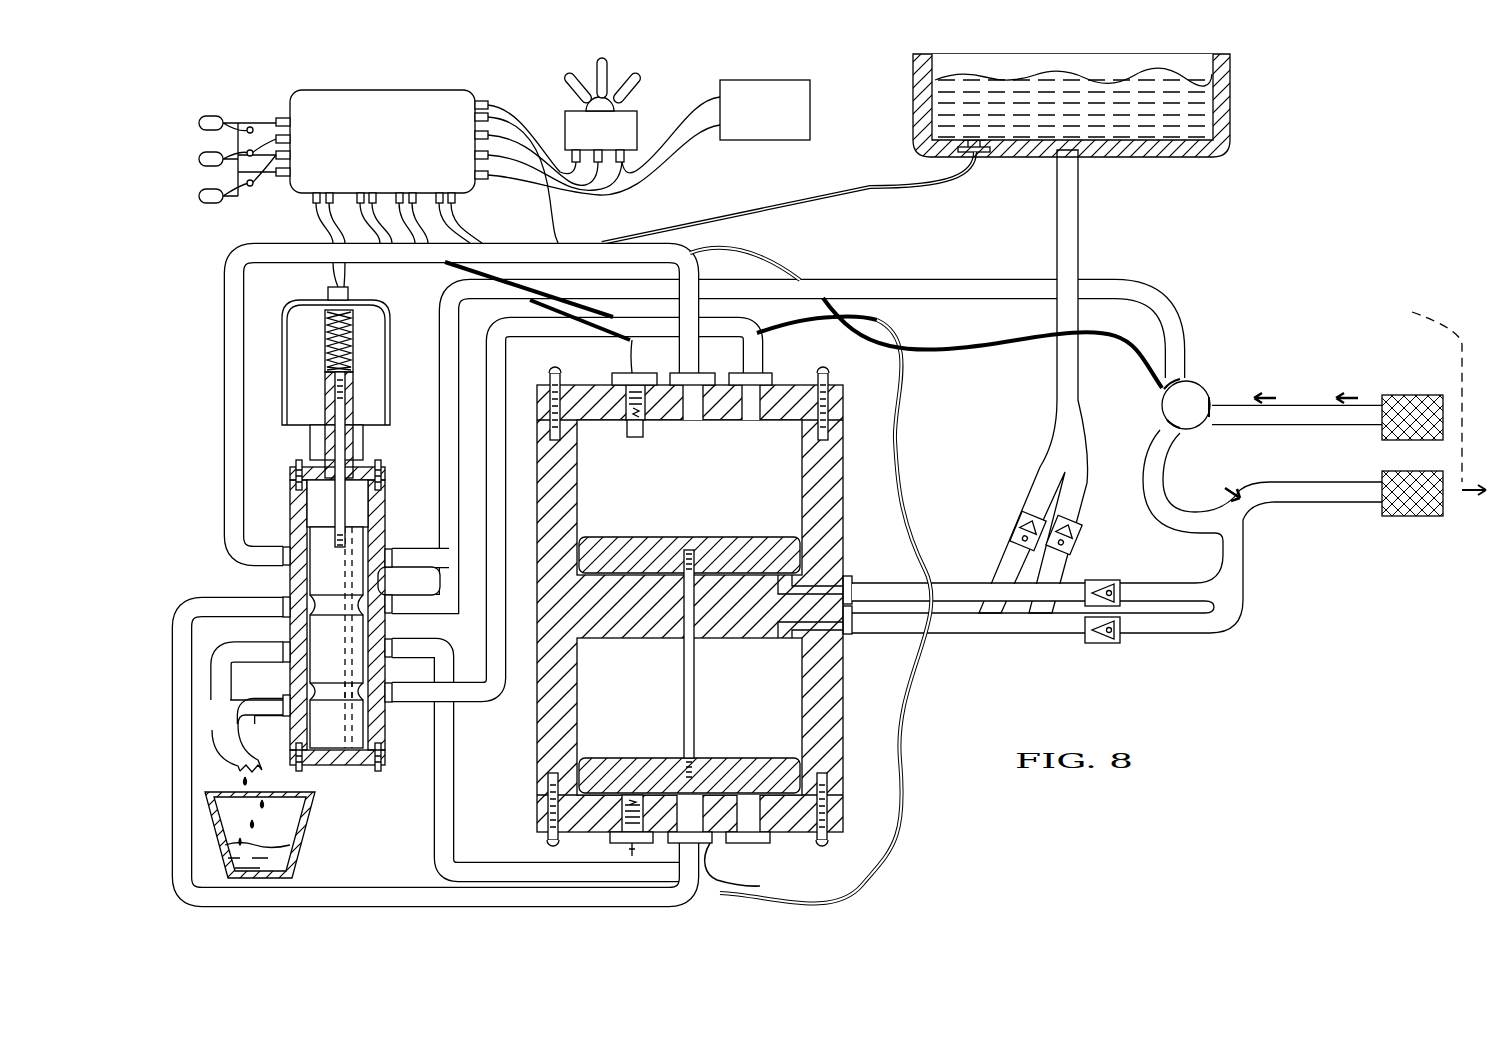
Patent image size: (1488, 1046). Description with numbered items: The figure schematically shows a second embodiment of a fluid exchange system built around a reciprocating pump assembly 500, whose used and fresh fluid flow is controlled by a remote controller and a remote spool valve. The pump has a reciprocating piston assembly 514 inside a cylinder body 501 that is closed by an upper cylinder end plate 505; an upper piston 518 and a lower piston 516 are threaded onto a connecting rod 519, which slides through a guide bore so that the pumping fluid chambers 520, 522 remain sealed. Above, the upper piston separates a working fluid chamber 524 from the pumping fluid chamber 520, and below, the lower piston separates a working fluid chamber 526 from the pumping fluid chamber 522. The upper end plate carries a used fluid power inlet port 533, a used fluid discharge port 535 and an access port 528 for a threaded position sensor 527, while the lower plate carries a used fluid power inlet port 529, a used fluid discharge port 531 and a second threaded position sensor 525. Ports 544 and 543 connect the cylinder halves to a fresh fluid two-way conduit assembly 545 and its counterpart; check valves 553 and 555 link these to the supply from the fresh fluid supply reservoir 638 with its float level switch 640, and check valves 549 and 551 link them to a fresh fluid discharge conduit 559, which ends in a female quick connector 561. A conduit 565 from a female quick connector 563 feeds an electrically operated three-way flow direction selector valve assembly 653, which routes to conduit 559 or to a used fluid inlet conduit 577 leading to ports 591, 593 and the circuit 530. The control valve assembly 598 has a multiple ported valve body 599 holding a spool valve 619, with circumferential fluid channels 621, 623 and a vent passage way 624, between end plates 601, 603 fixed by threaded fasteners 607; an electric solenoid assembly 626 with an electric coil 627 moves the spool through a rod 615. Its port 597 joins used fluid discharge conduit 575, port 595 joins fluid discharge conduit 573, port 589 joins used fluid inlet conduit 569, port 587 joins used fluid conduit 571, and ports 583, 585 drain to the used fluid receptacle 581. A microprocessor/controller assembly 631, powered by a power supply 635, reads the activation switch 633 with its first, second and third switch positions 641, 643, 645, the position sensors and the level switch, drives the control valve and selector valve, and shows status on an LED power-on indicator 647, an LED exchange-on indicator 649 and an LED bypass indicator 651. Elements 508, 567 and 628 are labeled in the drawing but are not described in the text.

The reciprocating pump assembly 500 is at (723, 622).
The cylinder body 501 is at (800, 704).
The upper cylinder end plate 505 is at (838, 397).
The bottom end plate 508 is at (838, 821).
The reciprocating piston assembly 514 is at (785, 554).
The lower piston 516 is at (800, 769).
The upper piston 518 is at (790, 530).
The connecting rod 519 is at (770, 679).
The pumping fluid chamber 520 is at (703, 607).
The pumping fluid chamber 522 is at (770, 729).
The working fluid chamber 524 is at (565, 560).
The threaded position sensor 525 is at (605, 843).
The working fluid chamber 526 is at (545, 789).
The threaded position sensor 527 is at (612, 374).
The access port 528 is at (645, 417).
The used fluid power inlet port 529 is at (725, 870).
The circuit 530 is at (1428, 395).
The used fluid discharge port 531 is at (757, 843).
The used fluid power inlet port 533 is at (680, 372).
The used fluid discharge port 535 is at (760, 372).
The port 543 is at (852, 630).
The port 544 is at (878, 566).
The fresh fluid two-way conduit assembly 545 is at (995, 622).
The check valve 549 is at (1108, 647).
The check valve 551 is at (1095, 580).
The check valve 553 is at (1015, 518).
The check valve 555 is at (1080, 538).
The fresh fluid discharge conduit 559 is at (1243, 571).
The female quick connector 561 is at (1413, 516).
The female quick connector 563 is at (1412, 395).
The conduit 565 is at (1292, 408).
The return line 567 is at (1165, 485).
The used fluid inlet conduit 569 is at (230, 263).
The used fluid conduit 571 is at (388, 888).
The fluid discharge conduit 573 is at (435, 848).
The used fluid discharge conduit 575 is at (480, 647).
The used fluid inlet conduit 577 is at (440, 538).
The used fluid receptacle 581 is at (290, 853).
The port 583 is at (290, 706).
The port 585 is at (290, 661).
The port 587 is at (278, 617).
The port 589 is at (278, 574).
The port 591 is at (383, 518).
The port 593 is at (412, 589).
The port 595 is at (400, 649).
The port 597 is at (395, 694).
The control valve assembly 598 is at (305, 533).
The multiple ported valve body 599 is at (378, 710).
The end plate 601 is at (387, 471).
The end plate 603 is at (382, 769).
The threaded fasteners 607 is at (298, 464).
The rod 615 is at (365, 440).
The spool valve 619 is at (383, 498).
The circumferential fluid channel 621 is at (325, 689).
The circumferential fluid channel 623 is at (325, 604).
The vent passage way 624 is at (385, 744).
The electric solenoid assembly 626 is at (375, 307).
The electric coil 627 is at (355, 332).
The solenoid housing 628 is at (320, 312).
The microprocessor/controller assembly 631 is at (400, 90).
The activation switch 633 is at (632, 106).
The power supply 635 is at (800, 112).
The fresh fluid supply reservoir 638 is at (1212, 106).
The float level switch 640 is at (945, 118).
The first switch position 641 is at (566, 88).
The second switch position 643 is at (590, 72).
The third switch position 645 is at (626, 86).
The LED power-on indicator 647 is at (202, 189).
The LED exchange-on indicator 649 is at (202, 152).
The LED bypass indicator 651 is at (210, 116).
The electrically-operated three-way flow direction selector valve assembly 653 is at (1200, 384).